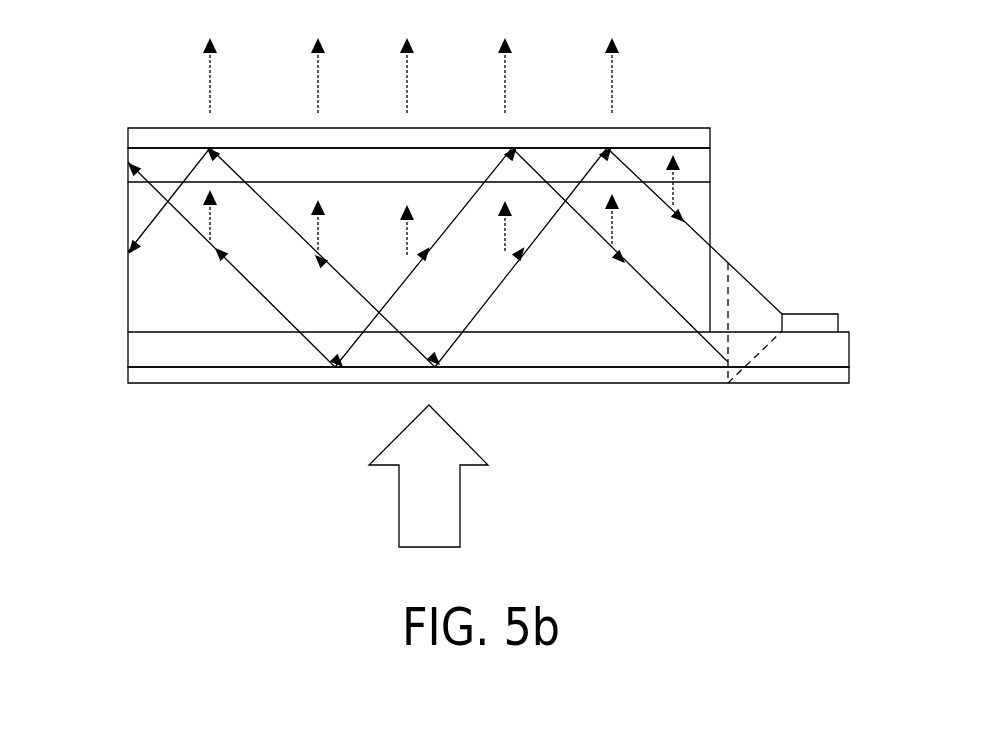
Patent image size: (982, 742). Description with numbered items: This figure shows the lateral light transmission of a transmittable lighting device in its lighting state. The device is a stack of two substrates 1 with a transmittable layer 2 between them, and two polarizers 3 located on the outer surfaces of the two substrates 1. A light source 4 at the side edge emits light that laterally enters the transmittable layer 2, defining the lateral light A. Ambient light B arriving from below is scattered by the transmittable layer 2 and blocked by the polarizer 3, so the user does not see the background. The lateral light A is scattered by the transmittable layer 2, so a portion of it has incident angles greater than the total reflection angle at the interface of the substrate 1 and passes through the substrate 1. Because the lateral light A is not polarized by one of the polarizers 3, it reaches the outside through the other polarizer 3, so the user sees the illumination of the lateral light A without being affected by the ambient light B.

The substrate 1 is at (130, 152).
The transmittable layer 2 is at (127, 282).
The polarizer 3 is at (173, 132).
The light source 4 is at (808, 314).
The lateral light A is at (613, 78).
The ambient light B is at (452, 502).